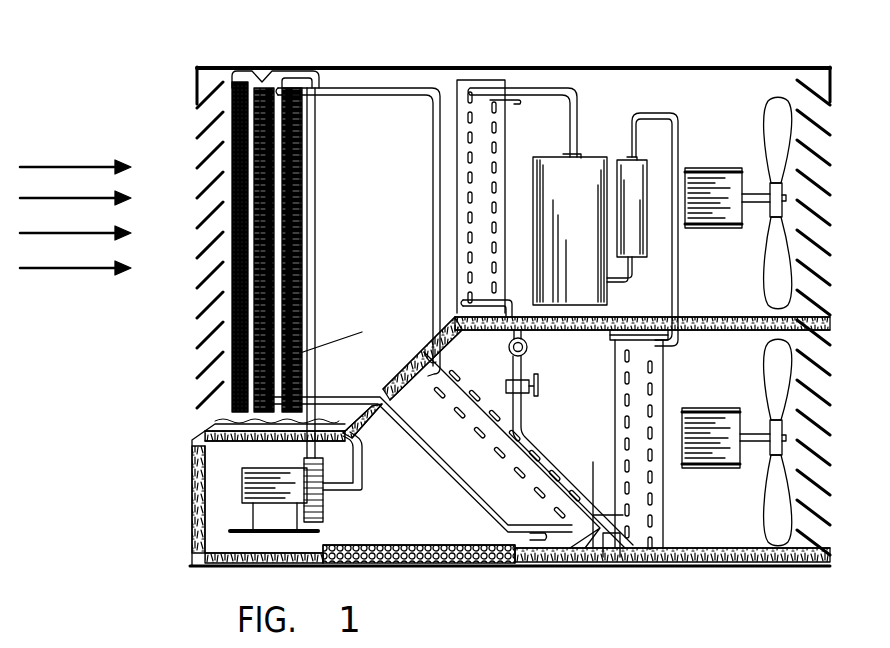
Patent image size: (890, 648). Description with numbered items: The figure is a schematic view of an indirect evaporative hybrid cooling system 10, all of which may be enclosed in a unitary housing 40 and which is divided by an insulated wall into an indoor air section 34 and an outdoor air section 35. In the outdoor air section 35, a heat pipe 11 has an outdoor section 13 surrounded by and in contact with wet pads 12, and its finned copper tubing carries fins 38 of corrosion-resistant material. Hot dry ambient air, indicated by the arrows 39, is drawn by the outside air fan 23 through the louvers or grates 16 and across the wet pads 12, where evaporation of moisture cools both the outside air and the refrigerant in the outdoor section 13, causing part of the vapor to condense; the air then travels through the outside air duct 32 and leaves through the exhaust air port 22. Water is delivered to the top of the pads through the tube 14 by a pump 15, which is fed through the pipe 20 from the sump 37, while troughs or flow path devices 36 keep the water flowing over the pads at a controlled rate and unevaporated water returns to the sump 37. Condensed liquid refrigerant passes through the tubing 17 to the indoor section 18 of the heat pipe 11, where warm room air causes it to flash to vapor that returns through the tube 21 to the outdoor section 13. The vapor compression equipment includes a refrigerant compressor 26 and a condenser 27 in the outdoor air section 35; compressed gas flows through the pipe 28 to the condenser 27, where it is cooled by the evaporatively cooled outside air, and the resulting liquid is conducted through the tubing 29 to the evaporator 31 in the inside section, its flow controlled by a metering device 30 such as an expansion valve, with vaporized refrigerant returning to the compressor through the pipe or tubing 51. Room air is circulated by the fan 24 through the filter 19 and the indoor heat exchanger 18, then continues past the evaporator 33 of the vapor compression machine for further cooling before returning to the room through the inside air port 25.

The cooling system 10 is at (115, 396).
The heat pipe 11 is at (410, 397).
The wet pads 12 is at (235, 134).
The outdoor section of heat pipe 13 is at (330, 302).
The tube 14 is at (313, 278).
The pump 15 is at (323, 507).
The louvers or grates 16 is at (205, 300).
The tubing 17 is at (340, 403).
The indoor section of heat pipe 18 is at (457, 400).
The filter 19 is at (514, 567).
The pipe 20 is at (362, 471).
The tube 21 is at (437, 150).
The exhaust air port 22 is at (830, 103).
The outside air fan 23 is at (773, 117).
The fan 24 is at (770, 365).
The inside air port 25 is at (815, 546).
The refrigerant compressor 26 is at (577, 158).
The condenser 27 is at (499, 162).
The pipe 28 is at (574, 95).
The tubing 29 is at (505, 301).
The metering device 30 is at (540, 385).
The evaporator 31 is at (593, 550).
The outside air duct 32 is at (440, 78).
The evaporator of vapor compression machine 33 is at (665, 414).
The indoor air section 34 is at (650, 600).
The outdoor air section 35 is at (688, 50).
The troughs or flow path devices 36 is at (263, 75).
The sump 37 is at (202, 426).
The fins 38 is at (300, 224).
The arrows 39 is at (70, 273).
The unitary housing 40 is at (588, 68).
The pipe or tubing 51 is at (682, 284).